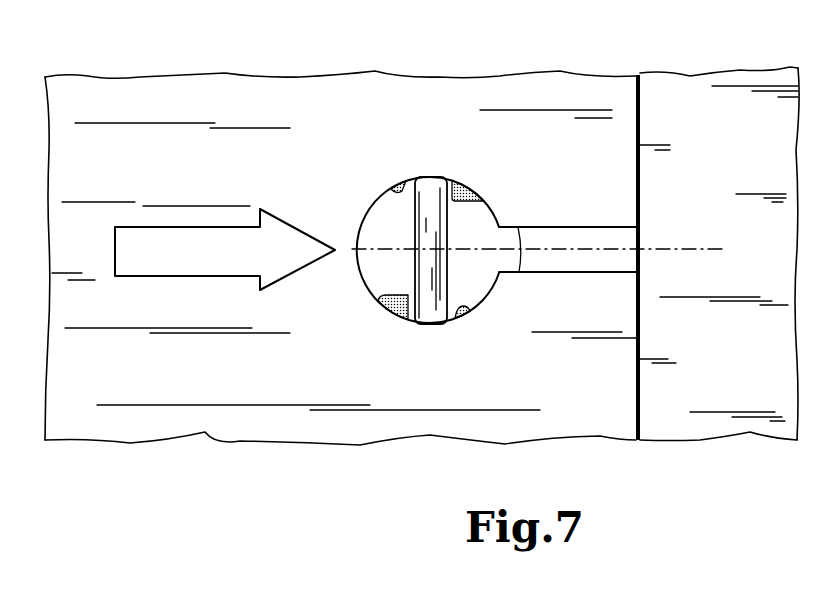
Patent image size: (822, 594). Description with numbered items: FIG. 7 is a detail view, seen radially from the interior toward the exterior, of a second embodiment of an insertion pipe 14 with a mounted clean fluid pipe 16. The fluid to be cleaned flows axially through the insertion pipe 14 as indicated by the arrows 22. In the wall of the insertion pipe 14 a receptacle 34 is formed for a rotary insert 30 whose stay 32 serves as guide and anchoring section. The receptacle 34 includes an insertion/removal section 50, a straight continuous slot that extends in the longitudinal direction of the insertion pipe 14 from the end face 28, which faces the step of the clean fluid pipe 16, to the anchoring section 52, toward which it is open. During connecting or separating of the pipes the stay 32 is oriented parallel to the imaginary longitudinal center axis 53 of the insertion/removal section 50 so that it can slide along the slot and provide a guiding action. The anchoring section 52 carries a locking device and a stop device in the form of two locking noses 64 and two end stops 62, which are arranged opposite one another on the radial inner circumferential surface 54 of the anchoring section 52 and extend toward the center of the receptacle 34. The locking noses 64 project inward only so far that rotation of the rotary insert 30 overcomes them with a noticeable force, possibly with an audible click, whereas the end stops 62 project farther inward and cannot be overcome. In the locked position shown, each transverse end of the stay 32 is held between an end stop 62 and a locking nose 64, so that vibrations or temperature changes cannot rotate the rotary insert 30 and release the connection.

The insertion pipe 14 is at (146, 95).
The clean fluid pipe 16 is at (678, 402).
The arrows 22 is at (124, 250).
The end face 28 is at (654, 110).
The rotary insert 30 is at (369, 267).
The stay 32 is at (432, 185).
The receptacle 34 is at (519, 212).
The insertion/removal section 50 is at (616, 235).
The anchoring section 52 is at (355, 304).
The longitudinal center axis 53 is at (711, 248).
The radial inner circumferential surface 54 is at (376, 232).
The end stops 62 is at (468, 183).
The locking noses 64 is at (397, 182).